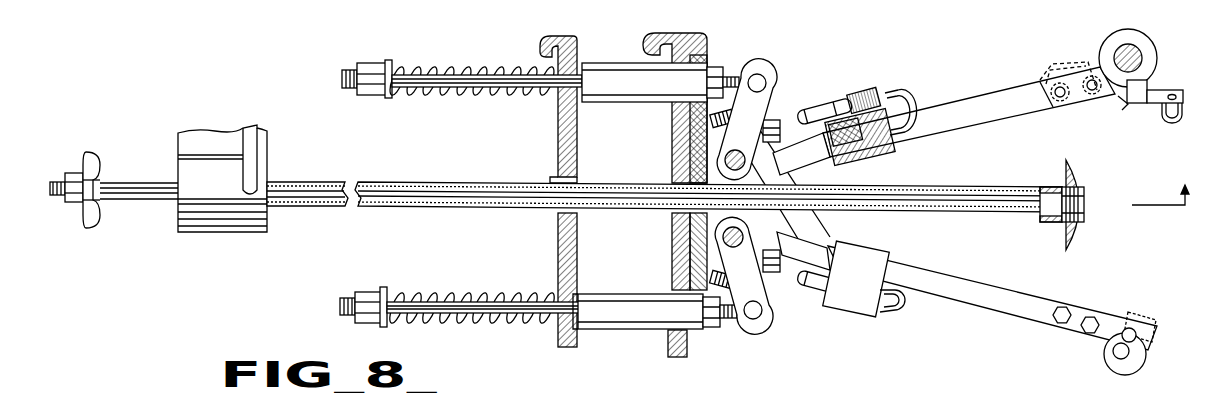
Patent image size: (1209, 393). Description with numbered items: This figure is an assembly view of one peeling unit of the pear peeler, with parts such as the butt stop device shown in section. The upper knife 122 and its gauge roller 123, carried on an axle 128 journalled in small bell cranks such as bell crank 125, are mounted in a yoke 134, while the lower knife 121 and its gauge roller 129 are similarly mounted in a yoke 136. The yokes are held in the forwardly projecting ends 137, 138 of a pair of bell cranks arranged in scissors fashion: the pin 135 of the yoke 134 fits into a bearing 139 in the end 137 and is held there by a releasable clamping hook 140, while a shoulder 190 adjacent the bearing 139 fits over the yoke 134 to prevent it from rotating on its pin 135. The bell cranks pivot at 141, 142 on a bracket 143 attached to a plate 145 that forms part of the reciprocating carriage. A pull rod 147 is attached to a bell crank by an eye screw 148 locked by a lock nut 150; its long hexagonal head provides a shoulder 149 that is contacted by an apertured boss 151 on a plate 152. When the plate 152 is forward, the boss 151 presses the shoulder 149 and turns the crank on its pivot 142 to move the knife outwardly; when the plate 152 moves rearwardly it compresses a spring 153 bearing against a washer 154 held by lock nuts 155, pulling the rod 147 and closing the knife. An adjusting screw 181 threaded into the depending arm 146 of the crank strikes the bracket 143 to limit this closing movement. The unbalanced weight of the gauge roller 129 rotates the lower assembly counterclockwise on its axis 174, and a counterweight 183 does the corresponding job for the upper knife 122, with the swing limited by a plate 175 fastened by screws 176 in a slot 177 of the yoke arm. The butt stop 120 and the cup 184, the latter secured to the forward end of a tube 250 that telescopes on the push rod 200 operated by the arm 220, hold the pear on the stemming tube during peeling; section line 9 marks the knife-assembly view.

The arm 220 is at (210, 215).
The lock nuts 155 is at (372, 292).
The washer 154 is at (385, 292).
The spring 153 is at (462, 292).
The pull rod 147 is at (548, 306).
The plate 152 is at (575, 348).
The bracket 143 is at (710, 235).
The plate 145 is at (676, 356).
The shoulder 149 is at (600, 286).
The apertured boss 151 is at (578, 332).
The lock nut 150 is at (716, 330).
The adjusting screw 181 is at (707, 137).
The pivot 141 is at (742, 165).
The pivot 142 is at (740, 232).
The eye screw 148 is at (742, 328).
The depending arm 146 is at (768, 315).
The yoke 134 is at (970, 100).
The yoke 136 is at (985, 300).
The forwardly projecting end 137 is at (800, 143).
The forwardly projecting end 138 is at (800, 283).
The bearing 139 is at (850, 157).
The pin 135 is at (878, 150).
The releasable clamping hook 140 is at (895, 100).
The shoulder 190 is at (905, 108).
The plate 175 is at (1090, 95).
The screws 176 is at (1055, 100).
The slot 177 is at (1050, 70).
The bell crank 125 is at (1124, 106).
The gauge roller 123 is at (1152, 52).
The axle 128 is at (1135, 46).
The knife 122 is at (1146, 88).
The counterweight 183 is at (1183, 115).
The push rod 200 is at (950, 200).
The tube 250 is at (980, 210).
The butt stop 120 is at (1090, 190).
The cup 184 is at (1080, 232).
The knife 121 is at (1140, 318).
The axis 174 is at (1137, 337).
The gauge roller 129 is at (1143, 362).
The section line 9 is at (1160, 191).